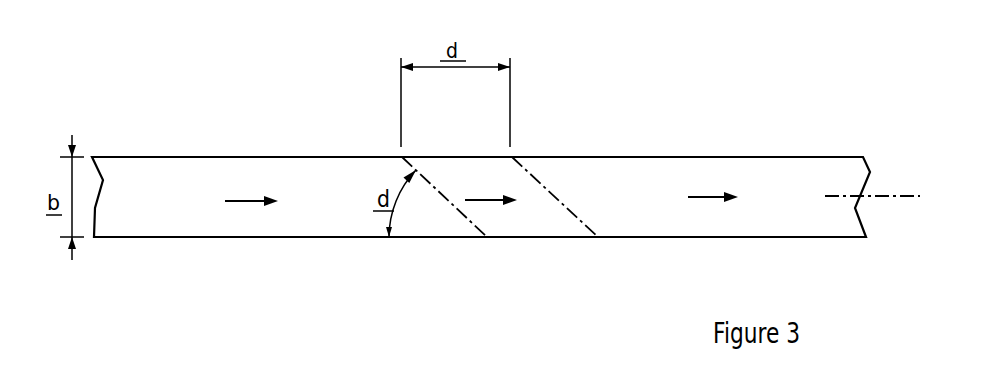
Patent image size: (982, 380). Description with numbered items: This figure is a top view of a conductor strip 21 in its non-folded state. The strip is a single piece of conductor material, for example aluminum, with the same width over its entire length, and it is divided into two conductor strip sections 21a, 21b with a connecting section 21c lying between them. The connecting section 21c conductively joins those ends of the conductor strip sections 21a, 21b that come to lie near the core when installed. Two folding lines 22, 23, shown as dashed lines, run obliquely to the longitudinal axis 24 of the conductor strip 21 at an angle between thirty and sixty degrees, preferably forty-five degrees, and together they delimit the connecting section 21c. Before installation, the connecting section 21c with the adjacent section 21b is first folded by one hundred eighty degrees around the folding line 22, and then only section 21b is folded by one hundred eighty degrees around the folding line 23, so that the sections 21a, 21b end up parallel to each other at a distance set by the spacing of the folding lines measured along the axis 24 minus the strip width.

The conductor strip 21 is at (303, 127).
The conductor strip section 21a is at (248, 180).
The conductor strip section 21b is at (705, 173).
The connecting section 21c is at (518, 216).
The folding line 22 is at (453, 205).
The folding line 23 is at (559, 203).
The longitudinal axis 24 is at (890, 196).